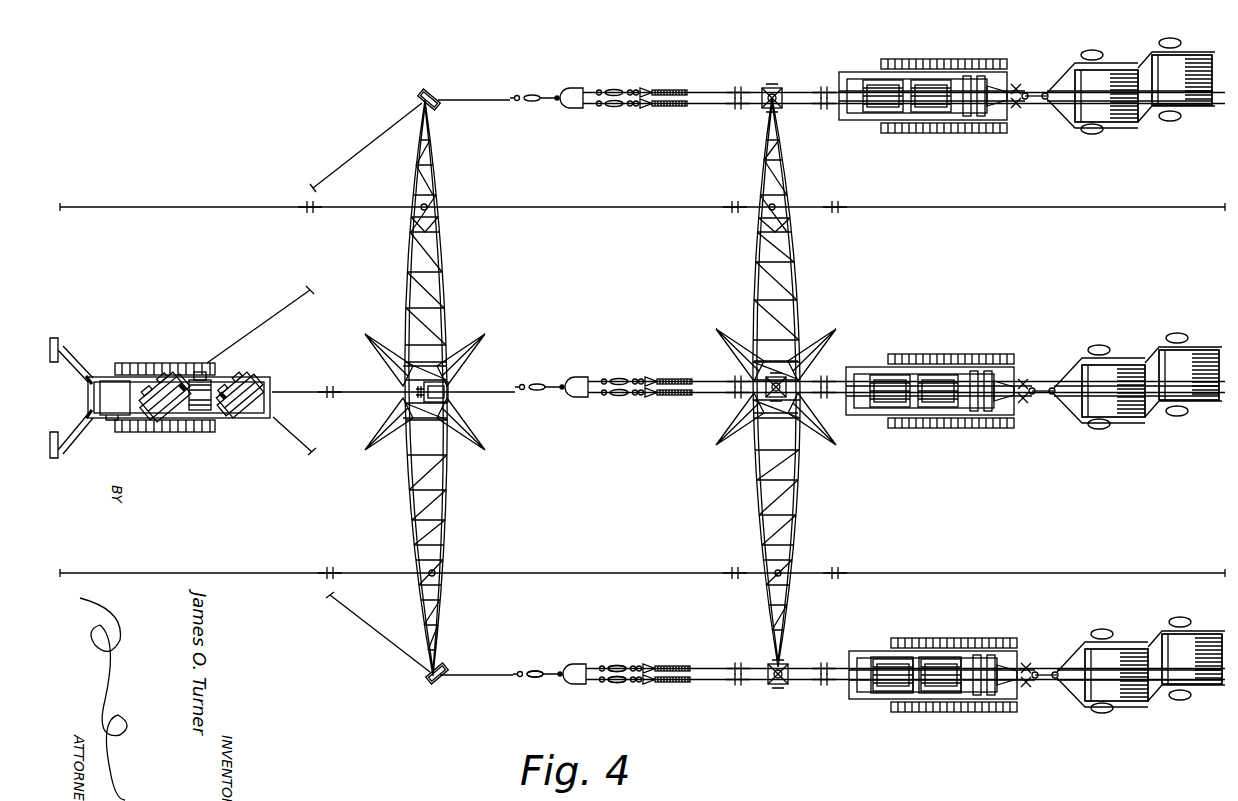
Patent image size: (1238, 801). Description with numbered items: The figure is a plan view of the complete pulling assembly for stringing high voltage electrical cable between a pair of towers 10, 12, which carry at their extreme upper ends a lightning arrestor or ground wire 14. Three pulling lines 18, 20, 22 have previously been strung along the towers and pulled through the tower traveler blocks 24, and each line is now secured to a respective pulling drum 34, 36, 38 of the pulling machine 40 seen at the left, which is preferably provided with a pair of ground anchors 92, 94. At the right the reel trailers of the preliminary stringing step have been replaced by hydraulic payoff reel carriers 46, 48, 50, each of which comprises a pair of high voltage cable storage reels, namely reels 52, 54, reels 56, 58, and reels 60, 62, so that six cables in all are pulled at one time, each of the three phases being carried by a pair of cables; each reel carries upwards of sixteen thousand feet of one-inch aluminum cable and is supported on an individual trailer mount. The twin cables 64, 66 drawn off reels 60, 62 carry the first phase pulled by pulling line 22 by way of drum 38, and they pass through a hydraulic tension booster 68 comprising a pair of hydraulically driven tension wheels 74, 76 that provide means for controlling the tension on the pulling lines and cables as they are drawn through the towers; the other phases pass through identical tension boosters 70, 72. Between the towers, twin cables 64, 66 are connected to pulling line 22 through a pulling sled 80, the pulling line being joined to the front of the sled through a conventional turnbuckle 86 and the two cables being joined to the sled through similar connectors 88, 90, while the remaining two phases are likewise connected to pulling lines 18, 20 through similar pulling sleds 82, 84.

The tower 10 is at (447, 282).
The tower 12 is at (796, 278).
The lightning arrestor or ground wire 14 is at (578, 206).
The pulling line 18 is at (357, 153).
The pulling line 20 is at (410, 392).
The pulling line 22 is at (298, 448).
The tower traveler block 24 is at (432, 93).
The pulling drum 34 is at (176, 372).
The pulling drum 36 is at (215, 372).
The pulling drum 38 is at (262, 380).
The pulling machine 40 is at (136, 366).
The hydraulic payoff reel carrier 46 is at (1134, 127).
The hydraulic payoff reel carrier 48 is at (1137, 323).
The hydraulic payoff reel carrier 50 is at (1121, 709).
The high voltage cable storage reel 52 is at (1088, 120).
The high voltage cable storage reel 54 is at (1182, 98).
The high voltage cable storage reel 56 is at (1092, 410).
The high voltage cable storage reel 58 is at (1174, 403).
The high voltage cable storage reel 60 is at (1092, 652).
The high voltage cable storage reel 62 is at (1190, 645).
The twin cable 64 is at (806, 664).
The twin cable 66 is at (826, 685).
The hydraulic tension booster 68 is at (948, 715).
The tension booster 70 is at (914, 136).
The tension booster 72 is at (917, 431).
The tension wheel 74 is at (884, 660).
The tension wheel 76 is at (938, 660).
The pulling sled 80 is at (578, 665).
The pulling sled 82 is at (571, 90).
The pulling sled 84 is at (573, 382).
The turnbuckle 86 is at (536, 670).
The connector 88 is at (628, 665).
The connector 90 is at (628, 684).
The ground anchor 92 is at (74, 438).
The ground anchor 94 is at (74, 358).